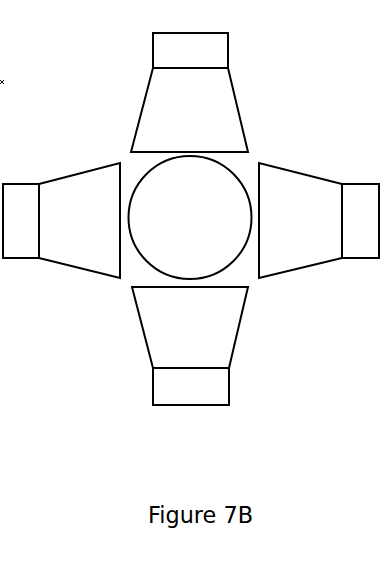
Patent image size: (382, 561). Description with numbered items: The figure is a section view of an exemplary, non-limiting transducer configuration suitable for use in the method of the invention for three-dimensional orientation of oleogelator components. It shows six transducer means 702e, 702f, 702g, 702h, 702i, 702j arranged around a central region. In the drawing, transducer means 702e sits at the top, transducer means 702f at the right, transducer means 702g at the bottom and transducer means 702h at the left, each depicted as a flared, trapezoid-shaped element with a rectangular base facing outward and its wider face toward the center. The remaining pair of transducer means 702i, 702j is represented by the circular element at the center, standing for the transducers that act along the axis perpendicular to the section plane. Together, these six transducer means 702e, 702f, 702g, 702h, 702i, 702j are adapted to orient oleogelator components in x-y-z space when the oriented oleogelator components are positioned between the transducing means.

The transducer means 702e is at (189, 92).
The transducer means 702f is at (319, 220).
The transducer means 702g is at (190, 346).
The transducer means 702h is at (61, 220).
The transducer means 702i is at (190, 217).
The transducer means 702j is at (190, 217).